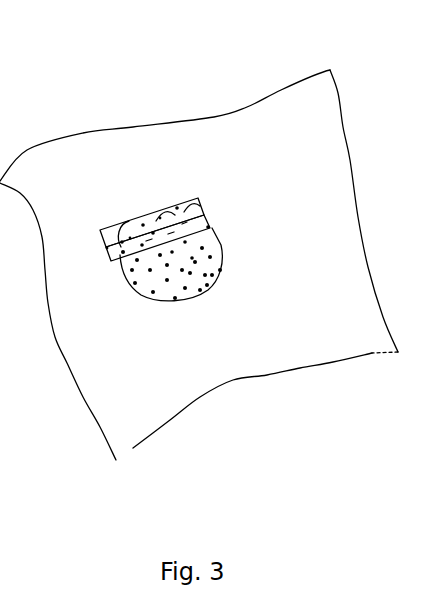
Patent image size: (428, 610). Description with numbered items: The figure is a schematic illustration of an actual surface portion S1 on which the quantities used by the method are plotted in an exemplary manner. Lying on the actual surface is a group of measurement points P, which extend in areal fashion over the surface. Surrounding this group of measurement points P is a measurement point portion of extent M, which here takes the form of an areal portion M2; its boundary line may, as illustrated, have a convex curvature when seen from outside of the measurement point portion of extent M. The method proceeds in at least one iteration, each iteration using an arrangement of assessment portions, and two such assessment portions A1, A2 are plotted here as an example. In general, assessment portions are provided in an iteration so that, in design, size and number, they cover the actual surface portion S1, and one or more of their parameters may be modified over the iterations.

The actual surface portion S1 is at (238, 113).
The assessment portion A1 is at (105, 238).
The assessment portion A2 is at (105, 252).
The measurement points P is at (207, 222).
The measurement point portion of extent M is at (237, 287).
The areal portion M2 is at (145, 294).